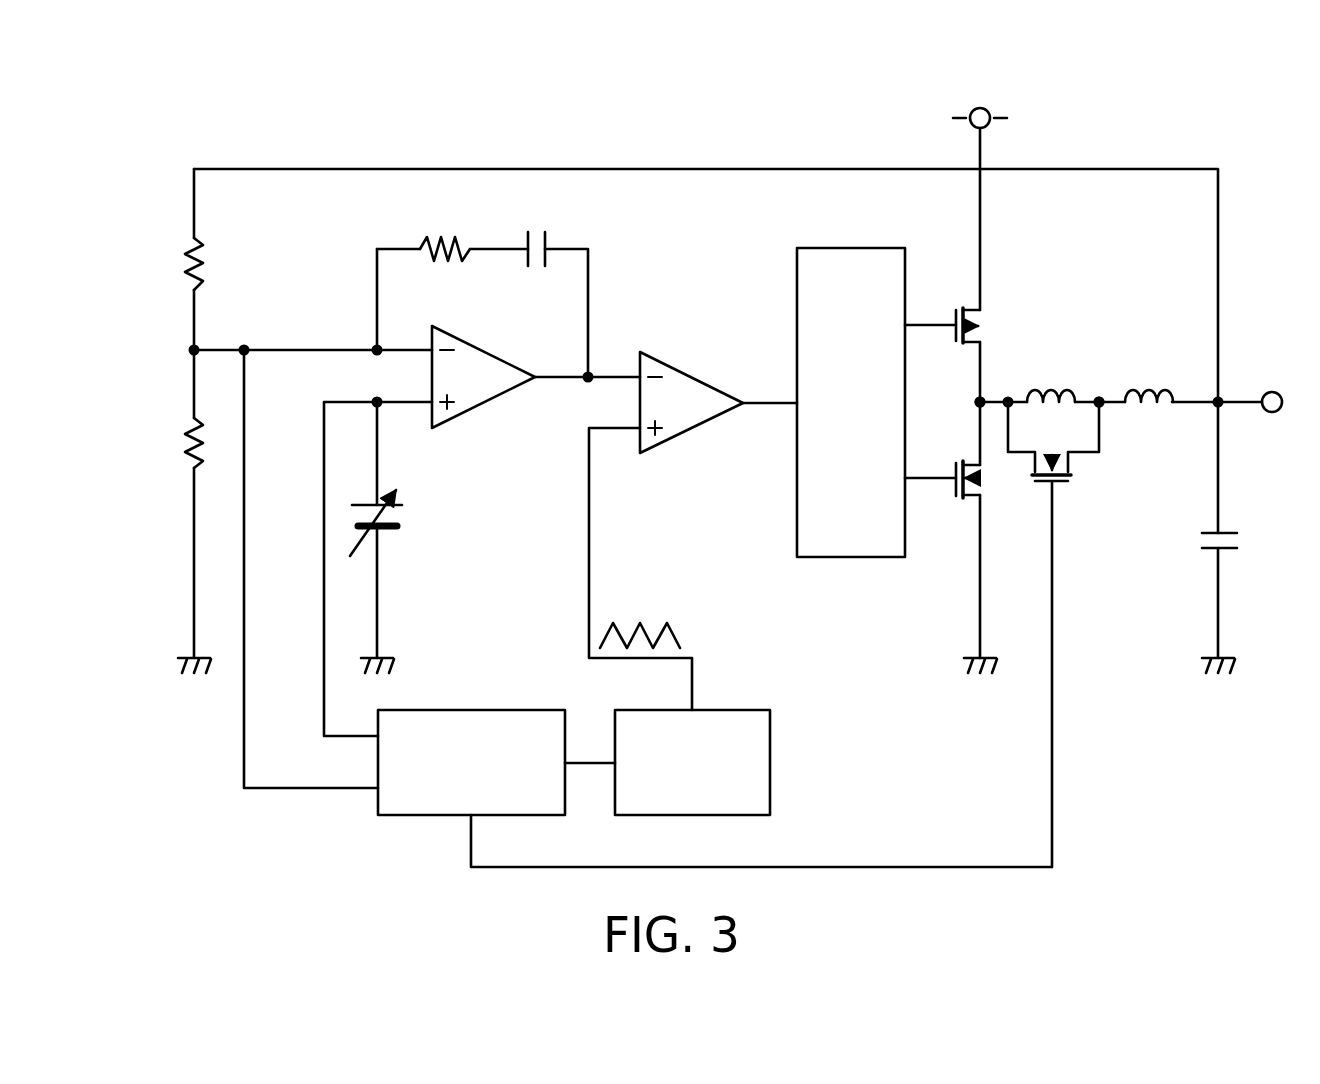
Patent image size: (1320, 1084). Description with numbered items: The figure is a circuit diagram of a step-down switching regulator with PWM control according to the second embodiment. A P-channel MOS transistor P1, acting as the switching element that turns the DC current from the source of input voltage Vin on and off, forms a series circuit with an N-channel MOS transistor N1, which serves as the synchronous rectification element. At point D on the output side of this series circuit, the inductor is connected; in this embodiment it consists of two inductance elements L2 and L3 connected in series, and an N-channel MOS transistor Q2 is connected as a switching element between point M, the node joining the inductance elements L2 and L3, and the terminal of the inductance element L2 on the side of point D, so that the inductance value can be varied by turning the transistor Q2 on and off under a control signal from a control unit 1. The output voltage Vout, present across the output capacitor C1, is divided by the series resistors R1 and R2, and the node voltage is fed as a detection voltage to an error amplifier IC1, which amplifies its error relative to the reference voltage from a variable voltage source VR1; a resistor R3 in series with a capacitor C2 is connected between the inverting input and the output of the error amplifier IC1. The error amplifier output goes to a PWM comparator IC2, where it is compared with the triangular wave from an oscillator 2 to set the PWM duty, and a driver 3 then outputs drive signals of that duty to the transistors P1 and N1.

The control unit 1 is at (458, 710).
The oscillator 2 is at (720, 710).
The driver 3 is at (848, 248).
The resistor R1 is at (185, 262).
The resistor R2 is at (185, 442).
The resistor R3 is at (448, 225).
The output capacitor C1 is at (1234, 537).
The capacitor C2 is at (540, 224).
The error amplifier IC1 is at (472, 343).
The PWM comparator IC2 is at (685, 368).
The voltage source VR1 is at (403, 520).
The P-channel MOS transistor P1 is at (988, 338).
The N-channel MOS transistor N1 is at (988, 483).
The N-channel MOS transistor Q2 is at (1074, 470).
The inductance element L2 is at (1055, 378).
The inductance element L3 is at (1150, 378).
The point D is at (969, 403).
The point M is at (1101, 390).
The input voltage Vin is at (980, 105).
The output voltage Vout is at (1272, 389).